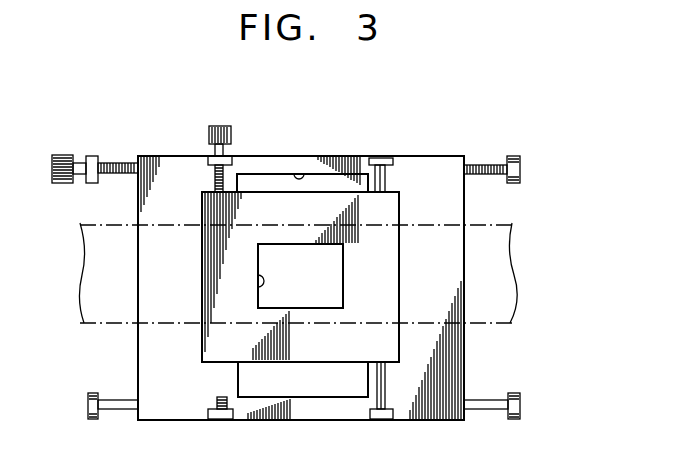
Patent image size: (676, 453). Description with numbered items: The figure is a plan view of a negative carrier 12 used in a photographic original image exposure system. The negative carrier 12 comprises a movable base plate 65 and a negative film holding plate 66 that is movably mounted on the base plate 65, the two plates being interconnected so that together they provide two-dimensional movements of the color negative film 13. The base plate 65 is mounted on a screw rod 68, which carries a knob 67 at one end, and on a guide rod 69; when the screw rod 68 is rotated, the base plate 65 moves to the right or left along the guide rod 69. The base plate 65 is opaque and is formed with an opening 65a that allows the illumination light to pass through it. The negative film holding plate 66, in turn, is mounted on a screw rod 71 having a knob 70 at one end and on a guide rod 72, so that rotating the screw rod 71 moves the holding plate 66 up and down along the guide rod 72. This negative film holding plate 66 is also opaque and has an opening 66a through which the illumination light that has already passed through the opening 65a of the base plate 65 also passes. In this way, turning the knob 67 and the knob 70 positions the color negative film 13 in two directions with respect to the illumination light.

The negative carrier 12 is at (403, 150).
The color negative film 13 is at (497, 283).
The movable base plate 65 is at (450, 368).
The opening 65a is at (300, 174).
The negative film holding plate 66 is at (382, 272).
The opening 66a is at (258, 281).
The knob 67 is at (62, 155).
The screw rod 68 is at (489, 165).
The guide rod 69 is at (118, 400).
The knob 70 is at (220, 126).
The screw rod 71 is at (215, 382).
The guide rod 72 is at (390, 177).